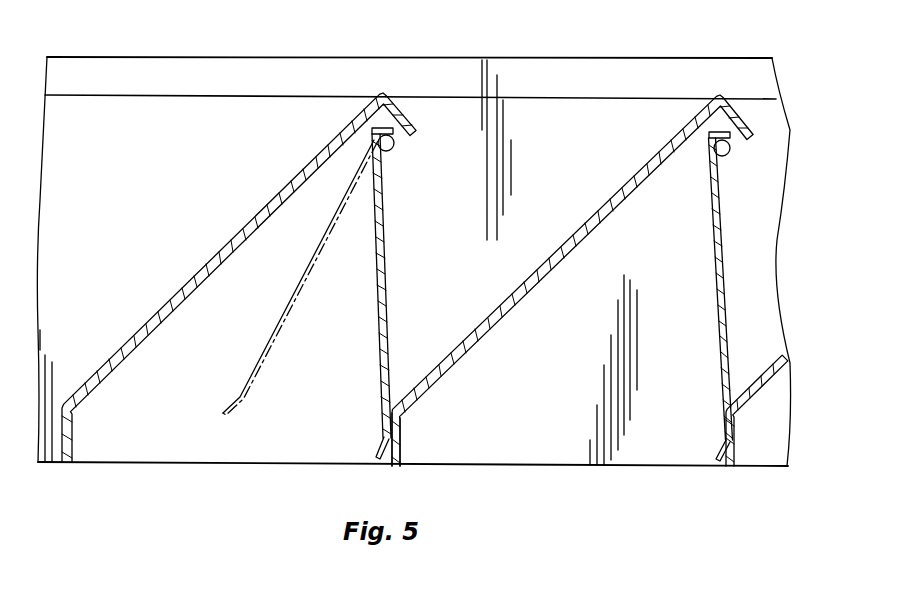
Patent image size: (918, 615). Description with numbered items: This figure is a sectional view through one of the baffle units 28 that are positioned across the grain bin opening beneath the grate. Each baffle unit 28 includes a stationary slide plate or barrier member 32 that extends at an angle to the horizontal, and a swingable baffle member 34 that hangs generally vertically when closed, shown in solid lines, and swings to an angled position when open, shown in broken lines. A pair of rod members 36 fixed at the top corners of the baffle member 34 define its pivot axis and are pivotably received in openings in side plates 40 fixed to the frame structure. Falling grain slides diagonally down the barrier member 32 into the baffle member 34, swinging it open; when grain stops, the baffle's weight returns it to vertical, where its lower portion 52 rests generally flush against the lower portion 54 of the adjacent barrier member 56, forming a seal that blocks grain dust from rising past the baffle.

The baffle unit 28 is at (235, 54).
The side plate 40 is at (143, 151).
The barrier member 32 is at (268, 212).
The baffle member 34 is at (377, 277).
The rod member 36 is at (391, 150).
The lower portion of the baffle 52 is at (382, 424).
The lower portion of the adjacent barrier member 54 is at (401, 407).
The adjacent barrier member 56 is at (552, 274).